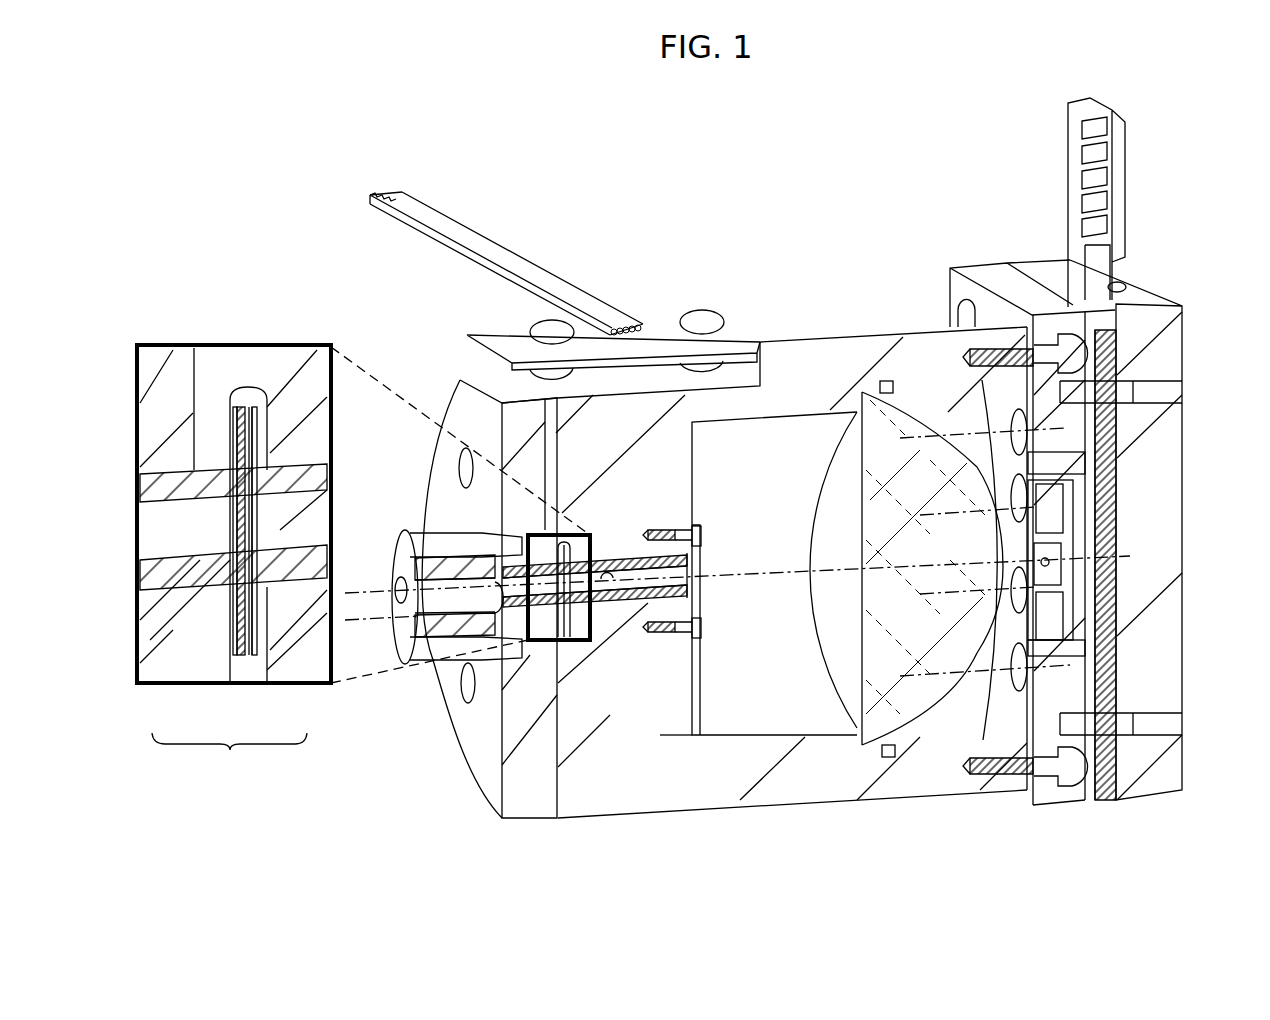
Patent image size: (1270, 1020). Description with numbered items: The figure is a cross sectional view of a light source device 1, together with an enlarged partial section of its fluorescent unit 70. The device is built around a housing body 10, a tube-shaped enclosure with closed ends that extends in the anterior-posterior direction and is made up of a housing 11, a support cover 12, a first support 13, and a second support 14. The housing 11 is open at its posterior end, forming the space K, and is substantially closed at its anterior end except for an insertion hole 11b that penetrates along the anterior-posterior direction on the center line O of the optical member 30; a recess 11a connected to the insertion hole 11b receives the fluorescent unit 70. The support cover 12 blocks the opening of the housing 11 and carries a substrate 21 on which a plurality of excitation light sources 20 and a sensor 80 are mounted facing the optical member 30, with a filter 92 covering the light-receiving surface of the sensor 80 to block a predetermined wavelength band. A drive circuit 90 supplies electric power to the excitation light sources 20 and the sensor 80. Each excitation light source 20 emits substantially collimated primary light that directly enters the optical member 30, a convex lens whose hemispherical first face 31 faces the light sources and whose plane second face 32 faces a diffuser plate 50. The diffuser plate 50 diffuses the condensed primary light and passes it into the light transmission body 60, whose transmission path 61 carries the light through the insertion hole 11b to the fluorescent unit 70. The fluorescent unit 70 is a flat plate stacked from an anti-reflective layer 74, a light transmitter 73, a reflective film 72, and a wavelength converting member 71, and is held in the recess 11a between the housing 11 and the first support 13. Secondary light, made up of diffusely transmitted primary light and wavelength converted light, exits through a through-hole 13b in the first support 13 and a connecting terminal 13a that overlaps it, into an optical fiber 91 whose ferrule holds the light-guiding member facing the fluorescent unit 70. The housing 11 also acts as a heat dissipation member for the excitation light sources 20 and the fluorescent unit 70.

The light source device 1 is at (1215, 142).
The housing body 10 is at (799, 496).
The housing 11 is at (742, 810).
The recess 11a is at (258, 407).
The insertion hole 11b is at (670, 670).
The support cover 12 is at (1048, 800).
The first support 13 is at (535, 822).
The connecting terminal 13a is at (413, 530).
The through-hole 13b is at (460, 680).
The second support 14 is at (1165, 797).
The excitation light source 20 is at (1013, 425).
The substrate 21 is at (1040, 632).
The optical member 30 is at (890, 740).
The first face 31 is at (925, 725).
The second face 32 is at (830, 493).
The diffuser plate 50 is at (693, 585).
The light transmission body 60 is at (642, 605).
The transmission path 61 is at (607, 605).
The fluorescent unit 70 is at (553, 640).
The wavelength converting member 71 is at (233, 655).
The reflective film 72 is at (240, 655).
The light transmitter 73 is at (248, 655).
The anti-reflective layer 74 is at (256, 655).
The sensor 80 is at (1050, 562).
The drive circuit 90 is at (1103, 792).
The optical fiber 91 is at (362, 585).
The filter 92 is at (1040, 530).
The center line O is at (1140, 550).